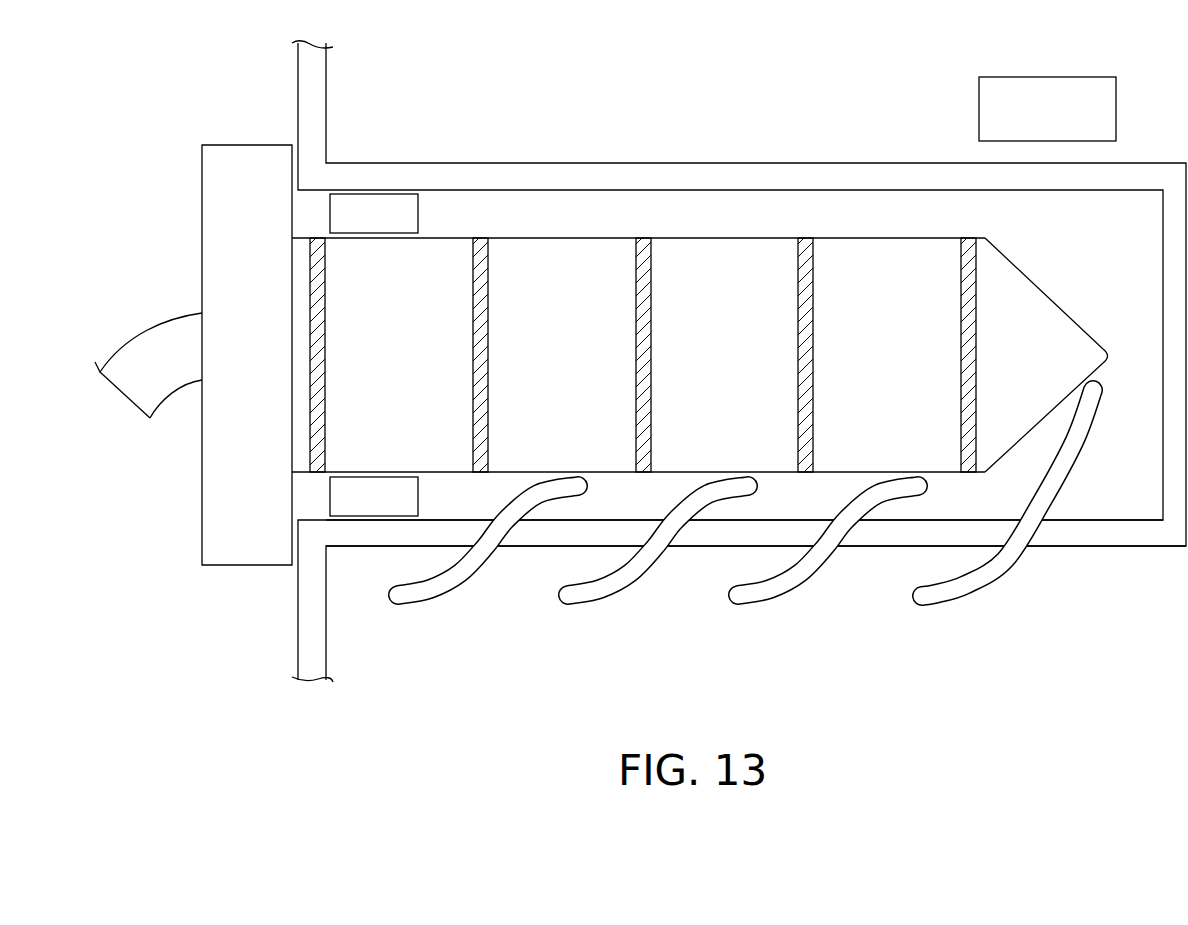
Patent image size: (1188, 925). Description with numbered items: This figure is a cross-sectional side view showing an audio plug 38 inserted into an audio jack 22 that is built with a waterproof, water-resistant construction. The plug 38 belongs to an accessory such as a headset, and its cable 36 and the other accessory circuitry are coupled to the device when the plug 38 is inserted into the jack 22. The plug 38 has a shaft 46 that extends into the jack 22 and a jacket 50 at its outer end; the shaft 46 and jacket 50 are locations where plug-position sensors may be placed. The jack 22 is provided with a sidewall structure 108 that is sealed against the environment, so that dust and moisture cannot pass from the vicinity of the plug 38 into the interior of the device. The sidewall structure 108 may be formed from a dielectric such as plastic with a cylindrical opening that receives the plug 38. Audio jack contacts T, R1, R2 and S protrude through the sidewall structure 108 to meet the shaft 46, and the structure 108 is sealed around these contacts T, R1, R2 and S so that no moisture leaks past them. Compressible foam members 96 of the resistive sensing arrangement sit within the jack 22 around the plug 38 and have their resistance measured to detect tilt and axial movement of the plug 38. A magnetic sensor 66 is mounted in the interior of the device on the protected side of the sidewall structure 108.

The audio jack 22 is at (853, 173).
The cable 36 is at (155, 345).
The audio plug 38 is at (1053, 262).
The shaft 46 is at (708, 236).
The jacket 50 is at (223, 497).
The magnetic sensor 66 is at (1041, 77).
The compressible foam member 96 is at (370, 207).
The sidewall structure 108 is at (1101, 533).
The audio jack contact S is at (413, 595).
The audio jack contact R2 is at (573, 595).
The audio jack contact R1 is at (750, 595).
The audio jack contact T is at (960, 588).